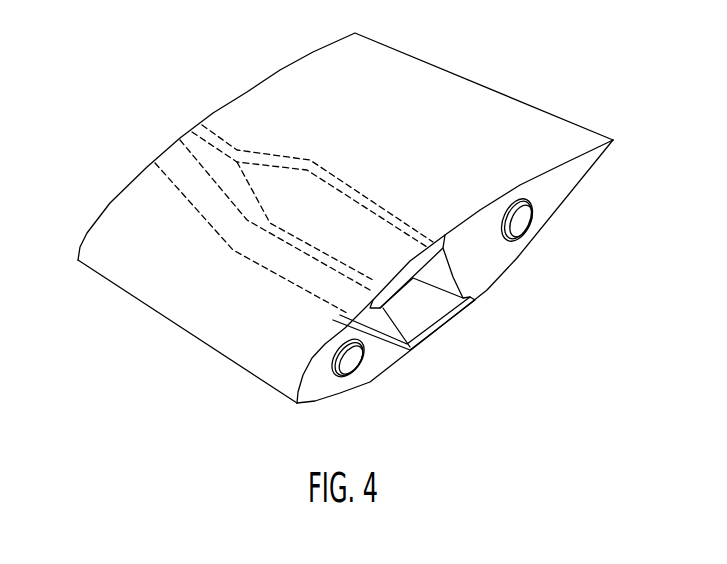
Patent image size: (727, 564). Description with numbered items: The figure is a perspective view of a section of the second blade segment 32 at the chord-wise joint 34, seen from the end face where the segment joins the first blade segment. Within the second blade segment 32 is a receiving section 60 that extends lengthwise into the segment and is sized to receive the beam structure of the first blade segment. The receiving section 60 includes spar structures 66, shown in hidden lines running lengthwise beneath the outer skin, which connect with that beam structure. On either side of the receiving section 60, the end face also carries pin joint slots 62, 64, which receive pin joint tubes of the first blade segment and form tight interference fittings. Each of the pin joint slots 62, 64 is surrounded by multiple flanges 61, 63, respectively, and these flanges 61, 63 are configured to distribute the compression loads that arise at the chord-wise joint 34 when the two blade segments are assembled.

The second blade segment 32 is at (440, 71).
The chord-wise joint 34 is at (304, 413).
The receiving section 60 is at (433, 312).
The flange 61 is at (340, 340).
The pin joint slot 62 is at (355, 363).
The flange 63 is at (508, 200).
The pin joint slot 64 is at (519, 226).
The spar structures 66 is at (350, 185).